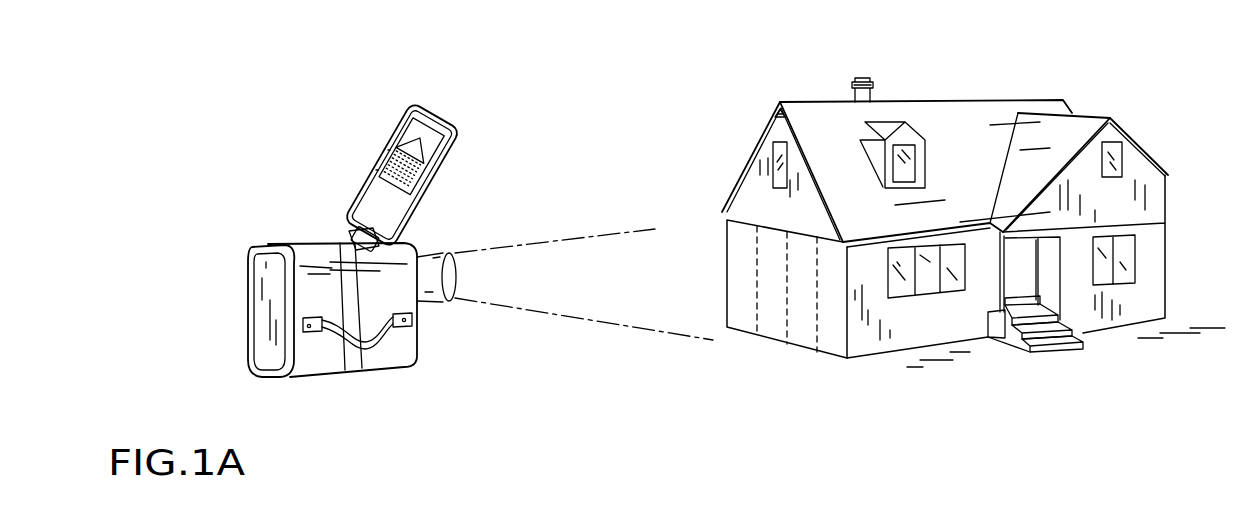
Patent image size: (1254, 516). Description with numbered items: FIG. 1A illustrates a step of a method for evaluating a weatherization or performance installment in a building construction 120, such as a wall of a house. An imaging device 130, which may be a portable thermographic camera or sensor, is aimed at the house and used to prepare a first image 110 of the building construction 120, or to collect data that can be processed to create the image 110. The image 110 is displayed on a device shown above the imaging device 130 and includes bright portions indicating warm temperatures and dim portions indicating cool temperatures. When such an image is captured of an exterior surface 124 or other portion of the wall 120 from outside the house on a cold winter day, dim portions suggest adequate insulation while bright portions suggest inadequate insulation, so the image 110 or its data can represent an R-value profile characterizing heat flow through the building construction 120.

The first image 110 is at (407, 147).
The building construction 120 is at (973, 245).
The exterior surface 124 is at (805, 337).
The imaging device 130 is at (323, 360).